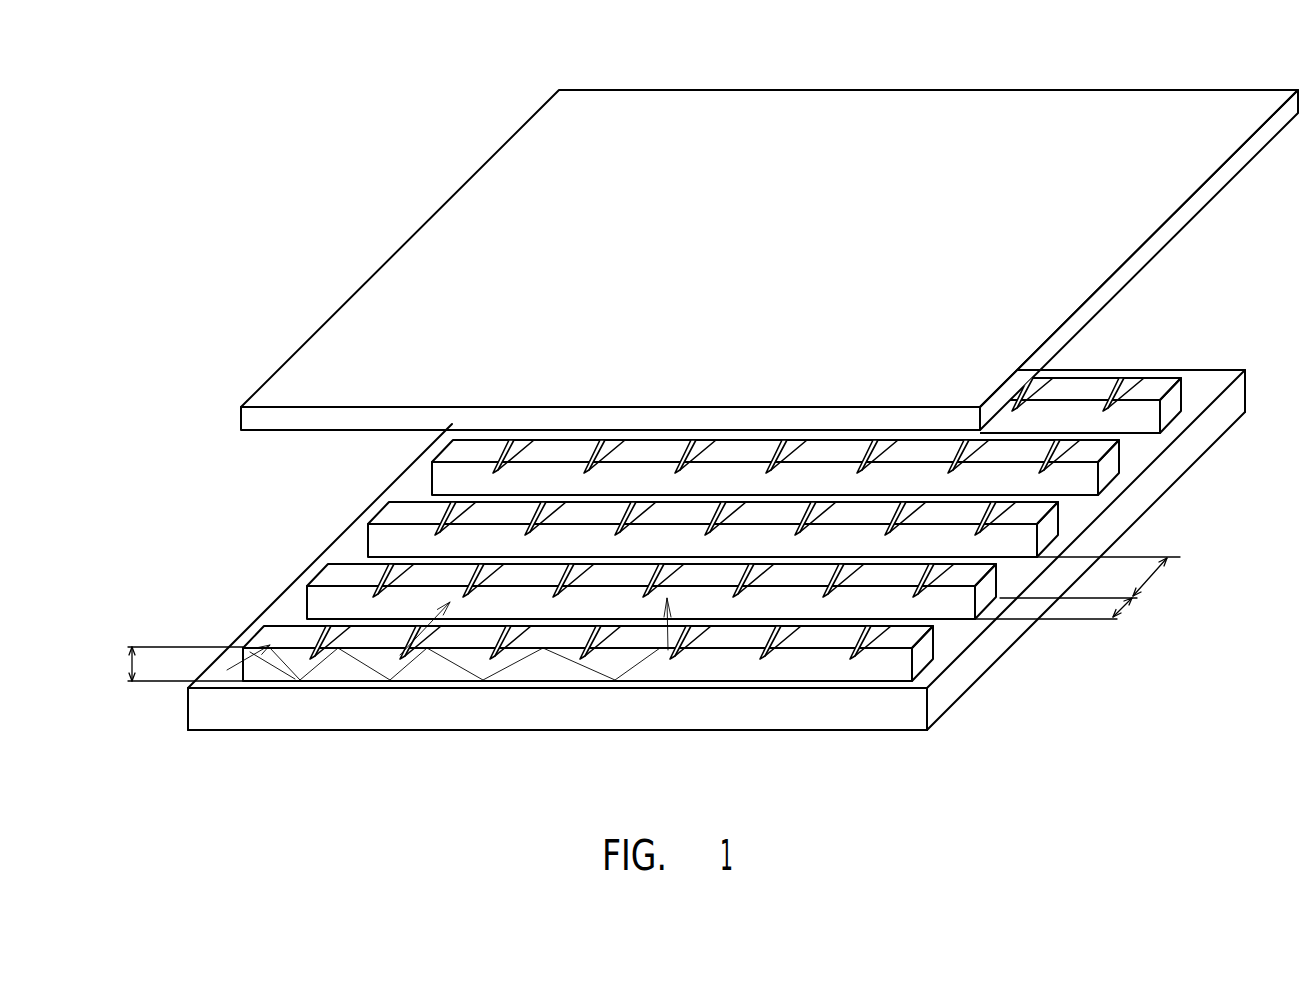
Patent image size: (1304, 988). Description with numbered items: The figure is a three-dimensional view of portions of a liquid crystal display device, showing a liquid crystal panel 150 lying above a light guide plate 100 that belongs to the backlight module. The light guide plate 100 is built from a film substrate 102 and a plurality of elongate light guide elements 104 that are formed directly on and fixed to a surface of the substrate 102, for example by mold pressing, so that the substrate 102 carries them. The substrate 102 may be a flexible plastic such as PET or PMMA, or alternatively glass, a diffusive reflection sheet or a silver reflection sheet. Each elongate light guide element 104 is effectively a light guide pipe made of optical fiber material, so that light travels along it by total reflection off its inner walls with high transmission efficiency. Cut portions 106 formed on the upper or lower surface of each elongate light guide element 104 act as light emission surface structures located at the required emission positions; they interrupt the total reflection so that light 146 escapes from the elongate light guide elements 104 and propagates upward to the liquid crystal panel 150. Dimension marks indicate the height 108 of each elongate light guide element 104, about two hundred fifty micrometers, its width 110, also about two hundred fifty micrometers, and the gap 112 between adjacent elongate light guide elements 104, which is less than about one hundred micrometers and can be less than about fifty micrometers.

The light guide plate 100 is at (653, 583).
The film substrate 102 is at (487, 710).
The elongate light guide elements 104 is at (737, 587).
The cut portions 106 is at (770, 656).
The height 108 is at (126, 663).
The width 110 is at (1118, 612).
The gap 112 is at (1148, 585).
The light 146 is at (424, 632).
The liquid crystal panel 150 is at (417, 240).